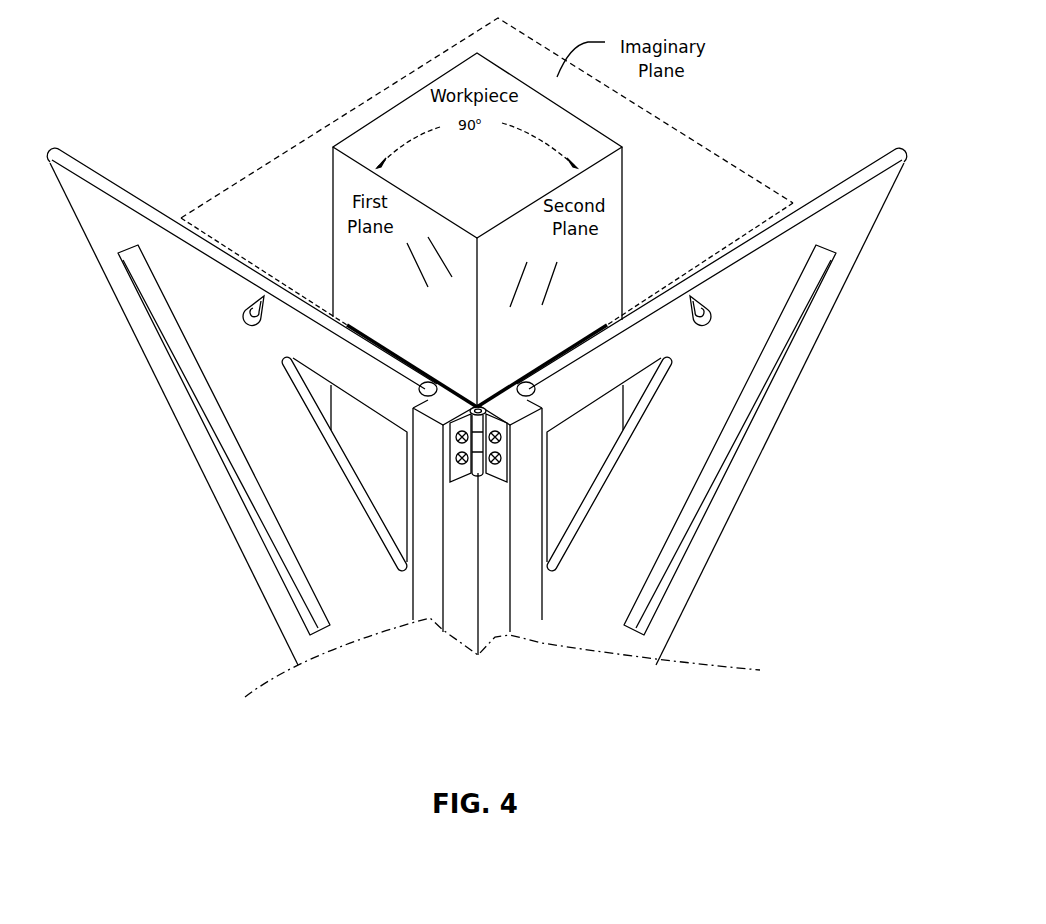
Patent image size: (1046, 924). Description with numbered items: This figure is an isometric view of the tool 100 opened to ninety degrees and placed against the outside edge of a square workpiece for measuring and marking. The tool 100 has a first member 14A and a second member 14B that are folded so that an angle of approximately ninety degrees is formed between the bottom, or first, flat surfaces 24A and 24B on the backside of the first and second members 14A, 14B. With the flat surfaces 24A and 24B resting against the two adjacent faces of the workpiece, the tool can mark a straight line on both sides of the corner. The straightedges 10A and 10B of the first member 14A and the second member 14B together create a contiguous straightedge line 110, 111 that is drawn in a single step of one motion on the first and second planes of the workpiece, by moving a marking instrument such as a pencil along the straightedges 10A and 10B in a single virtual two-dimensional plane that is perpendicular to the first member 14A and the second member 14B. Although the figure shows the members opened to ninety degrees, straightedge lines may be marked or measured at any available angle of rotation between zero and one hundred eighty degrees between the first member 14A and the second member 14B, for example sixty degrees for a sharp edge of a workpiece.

The tool 100 is at (722, 372).
The straightedge 10A is at (159, 218).
The straightedge 10B is at (812, 205).
The first flat surface 24A is at (90, 162).
The first flat surface 24B is at (862, 160).
The straightedge line 110 is at (401, 355).
The straightedge line 111 is at (603, 327).
The first member 14A is at (275, 465).
The second member 14B is at (668, 472).